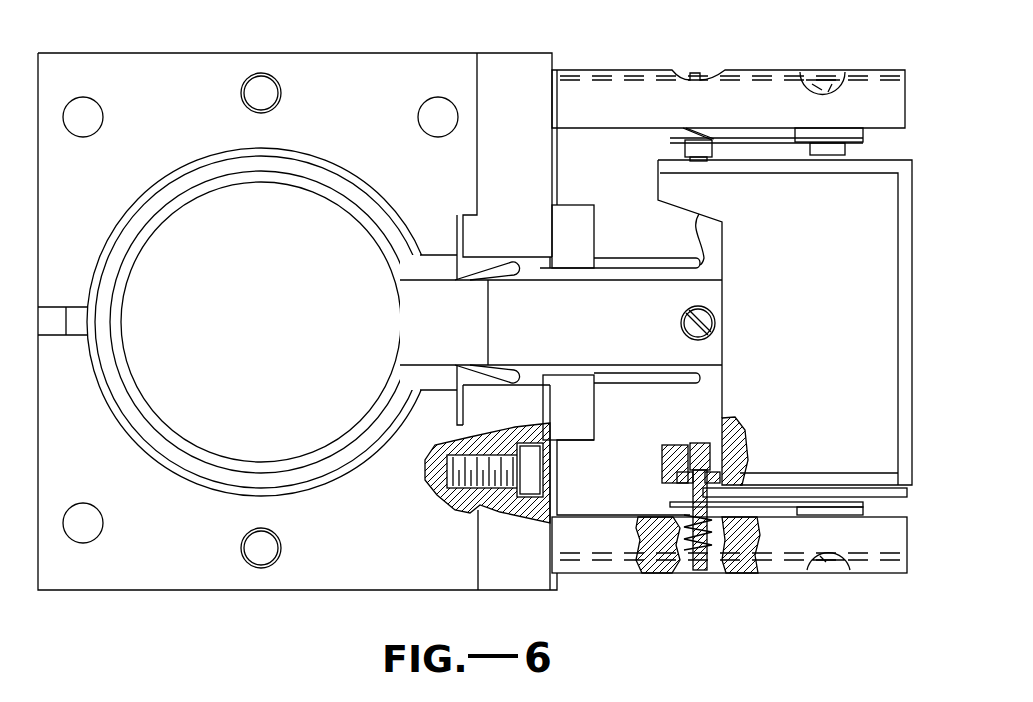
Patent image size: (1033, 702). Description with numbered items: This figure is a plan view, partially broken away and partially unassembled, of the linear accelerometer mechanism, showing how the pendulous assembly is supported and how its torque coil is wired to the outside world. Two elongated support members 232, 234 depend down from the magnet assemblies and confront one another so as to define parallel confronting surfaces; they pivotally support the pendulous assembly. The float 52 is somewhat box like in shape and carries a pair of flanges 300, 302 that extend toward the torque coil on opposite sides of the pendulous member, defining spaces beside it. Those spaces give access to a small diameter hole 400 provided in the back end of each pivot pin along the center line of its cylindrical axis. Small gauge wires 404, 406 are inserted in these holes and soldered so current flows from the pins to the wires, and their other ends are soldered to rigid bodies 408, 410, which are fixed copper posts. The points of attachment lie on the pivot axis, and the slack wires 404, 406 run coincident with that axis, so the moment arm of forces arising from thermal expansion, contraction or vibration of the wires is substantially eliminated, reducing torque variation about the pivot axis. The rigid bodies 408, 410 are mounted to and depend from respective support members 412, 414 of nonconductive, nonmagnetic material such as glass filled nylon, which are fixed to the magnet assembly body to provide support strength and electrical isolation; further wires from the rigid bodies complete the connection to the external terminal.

The elongated support member 234 is at (660, 68).
The flange 302 is at (658, 162).
The support member 414 is at (571, 214).
The rigid body 410 is at (666, 265).
The small gauge wire 406 is at (705, 235).
The small gauge wire 404 is at (700, 410).
The support member 412 is at (570, 432).
The rigid body 408 is at (668, 383).
The flange 300 is at (665, 488).
The hole 400 is at (698, 445).
The float 52 is at (870, 488).
The elongated support member 232 is at (757, 582).